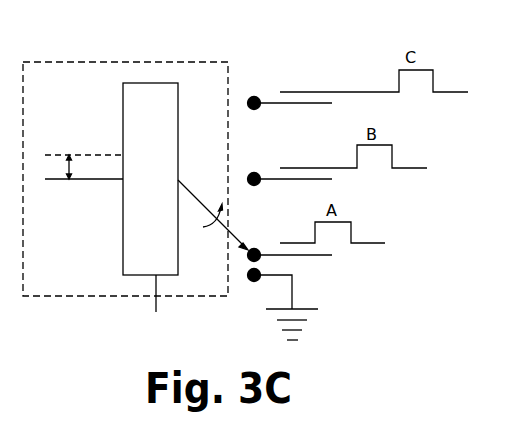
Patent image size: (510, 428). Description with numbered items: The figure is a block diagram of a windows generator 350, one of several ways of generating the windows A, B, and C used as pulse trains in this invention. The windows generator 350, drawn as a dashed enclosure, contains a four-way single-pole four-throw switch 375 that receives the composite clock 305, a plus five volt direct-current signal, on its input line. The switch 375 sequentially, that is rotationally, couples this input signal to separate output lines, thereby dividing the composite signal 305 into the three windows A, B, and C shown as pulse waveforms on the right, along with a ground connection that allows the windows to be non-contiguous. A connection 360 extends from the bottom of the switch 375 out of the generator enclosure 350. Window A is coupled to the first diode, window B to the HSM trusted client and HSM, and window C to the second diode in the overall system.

The windows generator 350 is at (72, 62).
The composite clock signal 305 is at (80, 155).
The 4-way (SP4T) switch 375 is at (170, 190).
The output connection 360 is at (159, 310).